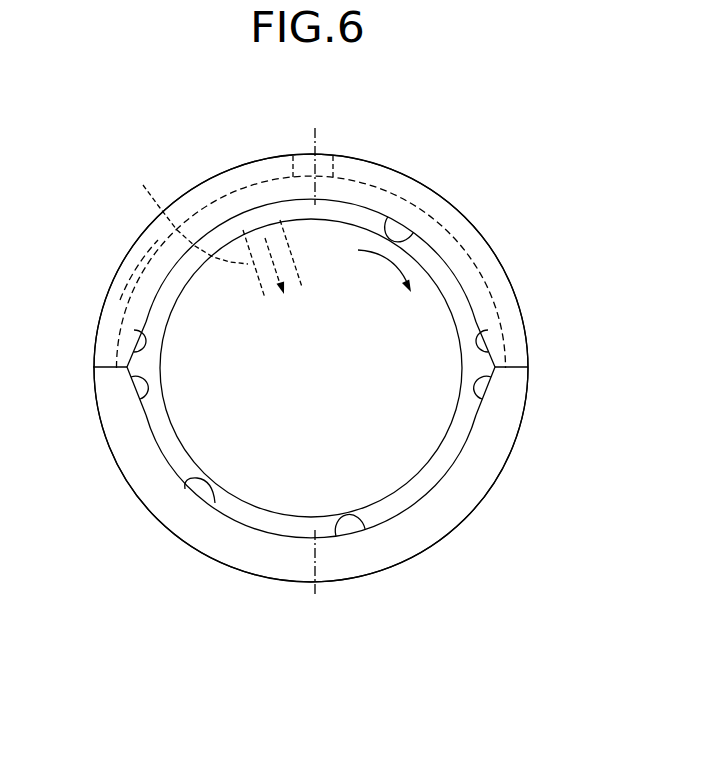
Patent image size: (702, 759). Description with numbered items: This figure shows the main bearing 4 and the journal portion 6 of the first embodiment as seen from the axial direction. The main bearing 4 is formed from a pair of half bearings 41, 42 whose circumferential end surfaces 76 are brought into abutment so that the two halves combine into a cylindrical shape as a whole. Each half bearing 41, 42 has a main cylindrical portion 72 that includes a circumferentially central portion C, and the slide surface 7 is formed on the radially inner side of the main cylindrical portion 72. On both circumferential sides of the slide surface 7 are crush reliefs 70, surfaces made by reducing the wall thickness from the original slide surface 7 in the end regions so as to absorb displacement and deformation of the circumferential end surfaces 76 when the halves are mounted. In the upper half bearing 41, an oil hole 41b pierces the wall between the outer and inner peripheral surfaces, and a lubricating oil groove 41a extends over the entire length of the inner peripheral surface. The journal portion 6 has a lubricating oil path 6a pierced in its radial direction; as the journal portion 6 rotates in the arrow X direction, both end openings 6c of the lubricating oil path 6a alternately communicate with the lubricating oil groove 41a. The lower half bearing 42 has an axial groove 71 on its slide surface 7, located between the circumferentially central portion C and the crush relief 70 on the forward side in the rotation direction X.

The main bearing 4 is at (380, 157).
The half bearing 41 is at (452, 202).
The half bearing 42 is at (459, 517).
The lubricating oil groove 41a is at (153, 285).
The oil hole 41b is at (325, 160).
The journal portion 6 is at (196, 433).
The lubricating oil path 6a is at (185, 214).
The end openings 6c is at (262, 223).
The slide surface 7 is at (367, 532).
The crush relief 70 is at (138, 330).
The axial groove 71 is at (215, 503).
The main cylindrical portion 72 is at (266, 168).
The circumferential end surface 76 is at (113, 366).
The circumferentially central portion C is at (313, 183).
The rotation direction X is at (374, 266).